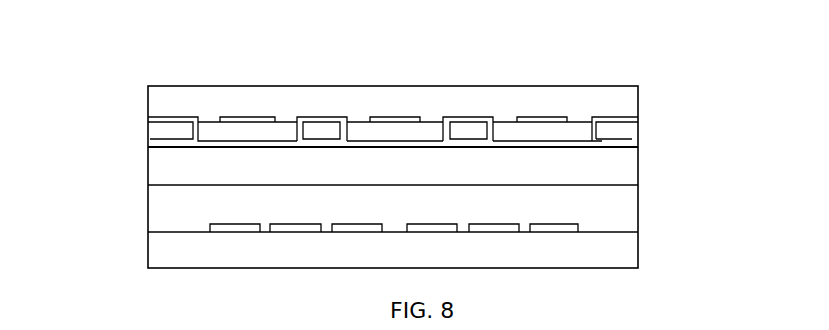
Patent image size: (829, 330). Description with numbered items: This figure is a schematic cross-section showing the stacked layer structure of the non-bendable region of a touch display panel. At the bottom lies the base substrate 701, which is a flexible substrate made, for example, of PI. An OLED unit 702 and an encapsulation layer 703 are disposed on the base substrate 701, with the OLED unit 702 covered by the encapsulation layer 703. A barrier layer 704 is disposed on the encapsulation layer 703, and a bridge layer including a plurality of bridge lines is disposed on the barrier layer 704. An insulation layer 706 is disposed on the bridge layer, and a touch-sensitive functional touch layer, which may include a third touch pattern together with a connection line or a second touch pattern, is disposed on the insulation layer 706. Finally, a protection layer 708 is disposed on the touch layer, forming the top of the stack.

The base substrate 701 is at (588, 252).
The OLED unit 702 is at (560, 224).
The encapsulation layer 703 is at (178, 198).
The barrier layer 704 is at (163, 157).
The insulation layer 706 is at (618, 141).
The protection layer 708 is at (400, 86).